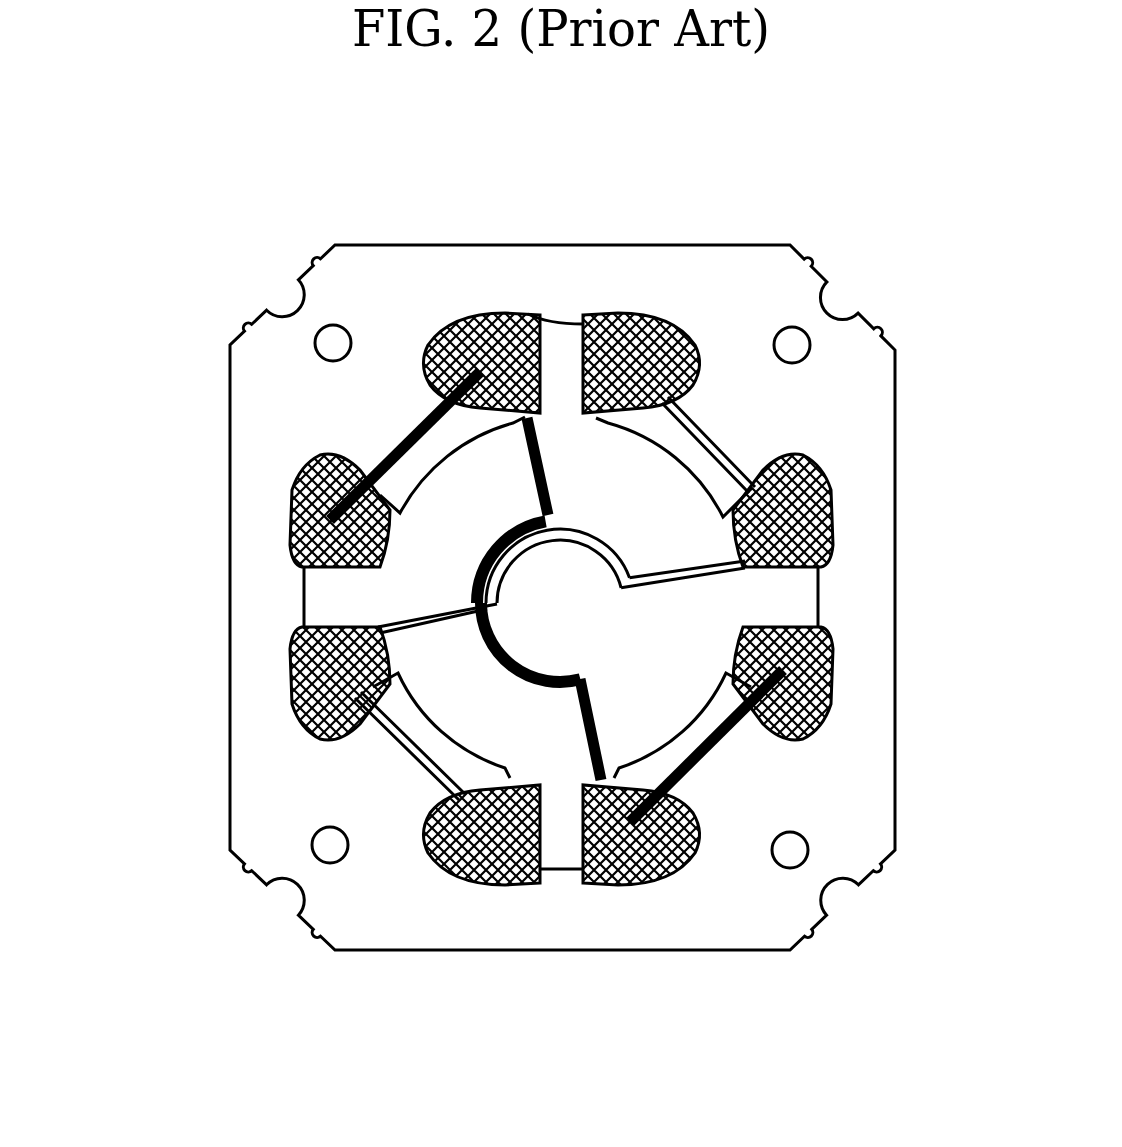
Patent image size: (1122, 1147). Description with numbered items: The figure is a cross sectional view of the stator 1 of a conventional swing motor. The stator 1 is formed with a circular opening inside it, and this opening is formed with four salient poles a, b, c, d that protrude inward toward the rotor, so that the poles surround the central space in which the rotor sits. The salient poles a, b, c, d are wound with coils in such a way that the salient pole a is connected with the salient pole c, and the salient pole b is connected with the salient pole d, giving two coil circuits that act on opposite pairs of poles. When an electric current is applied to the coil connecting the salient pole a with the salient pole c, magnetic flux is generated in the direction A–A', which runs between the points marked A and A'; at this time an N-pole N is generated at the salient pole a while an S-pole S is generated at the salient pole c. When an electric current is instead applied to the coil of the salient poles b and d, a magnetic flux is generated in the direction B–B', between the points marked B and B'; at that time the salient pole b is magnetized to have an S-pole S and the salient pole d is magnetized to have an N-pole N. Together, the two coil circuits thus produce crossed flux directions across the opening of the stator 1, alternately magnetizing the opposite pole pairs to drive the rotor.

The stator 1 is at (229, 377).
The magnetic flux direction end A is at (683, 363).
The magnetic flux direction end B is at (441, 363).
The magnetic flux direction end A' is at (434, 832).
The magnetic flux direction end B' is at (690, 835).
The N-pole N is at (731, 608).
The S-pole S is at (385, 586).
The salient pole a is at (674, 468).
The salient pole b is at (452, 472).
The salient pole c is at (441, 724).
The salient pole d is at (682, 724).